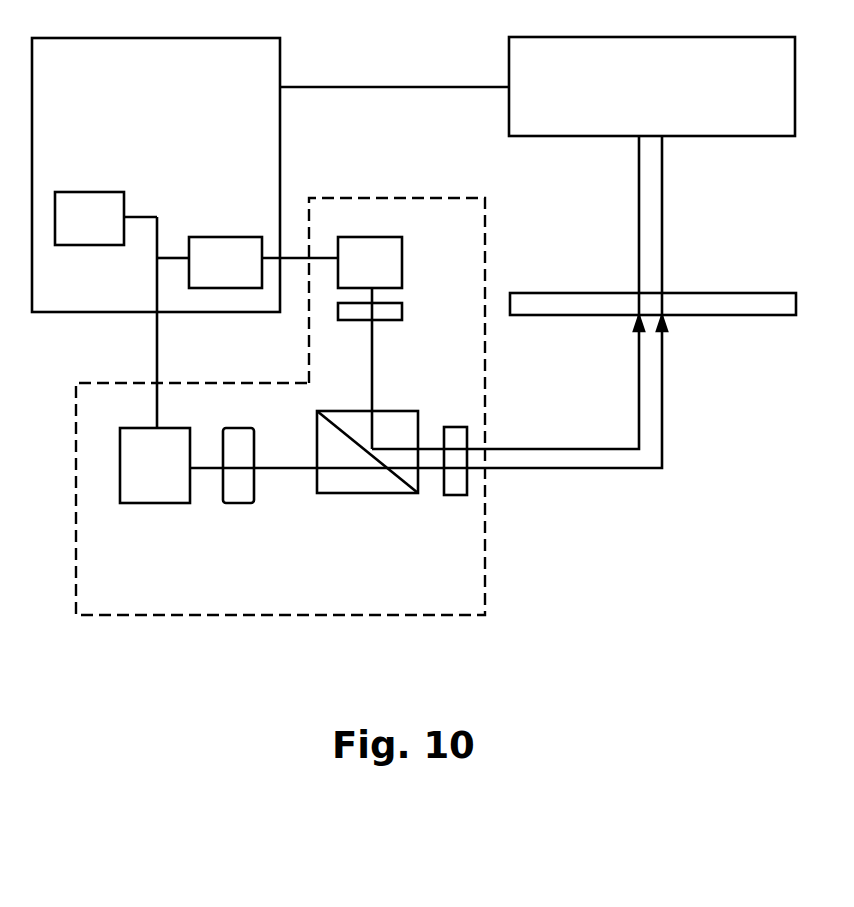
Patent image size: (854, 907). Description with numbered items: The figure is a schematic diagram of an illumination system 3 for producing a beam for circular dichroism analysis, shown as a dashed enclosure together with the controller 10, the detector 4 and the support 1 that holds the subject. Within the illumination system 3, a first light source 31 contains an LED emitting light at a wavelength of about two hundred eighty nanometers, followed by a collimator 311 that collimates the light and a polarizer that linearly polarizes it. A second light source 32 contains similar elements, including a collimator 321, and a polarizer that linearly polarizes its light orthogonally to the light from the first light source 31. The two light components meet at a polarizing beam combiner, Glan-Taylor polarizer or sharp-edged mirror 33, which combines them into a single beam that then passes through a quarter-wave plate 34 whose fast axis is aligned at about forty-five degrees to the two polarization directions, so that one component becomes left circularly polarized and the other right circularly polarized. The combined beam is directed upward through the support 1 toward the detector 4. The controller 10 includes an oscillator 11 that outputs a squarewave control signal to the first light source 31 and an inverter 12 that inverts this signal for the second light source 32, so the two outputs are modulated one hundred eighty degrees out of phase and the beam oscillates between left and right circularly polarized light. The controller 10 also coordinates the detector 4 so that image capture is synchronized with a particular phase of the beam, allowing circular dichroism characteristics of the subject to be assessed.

The controller 10 is at (241, 37).
The oscillator 11 is at (93, 245).
The inverter 12 is at (217, 237).
The detector 4 is at (705, 137).
The support 1 is at (769, 293).
The illumination system 3 is at (486, 567).
The second light source 32 is at (413, 237).
The collimator 321 is at (387, 322).
The first light source 31 is at (254, 508).
The collimator 311 is at (255, 490).
The polarizing beam combiner 33 is at (344, 495).
The quarter-wave plate 34 is at (456, 497).